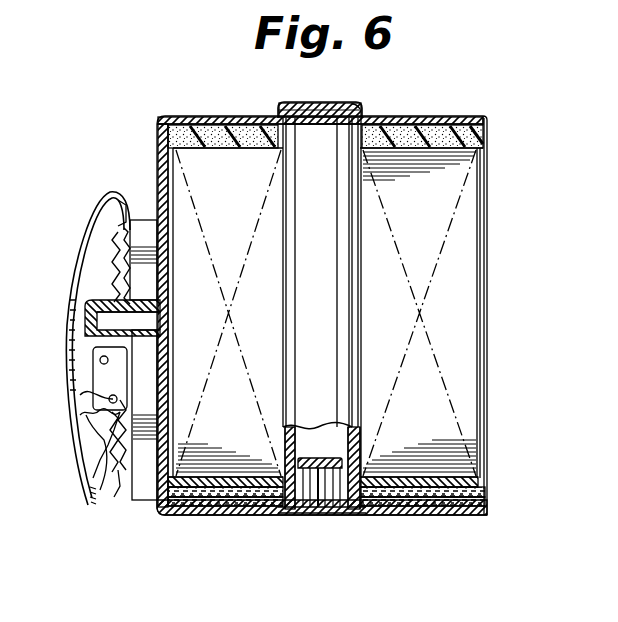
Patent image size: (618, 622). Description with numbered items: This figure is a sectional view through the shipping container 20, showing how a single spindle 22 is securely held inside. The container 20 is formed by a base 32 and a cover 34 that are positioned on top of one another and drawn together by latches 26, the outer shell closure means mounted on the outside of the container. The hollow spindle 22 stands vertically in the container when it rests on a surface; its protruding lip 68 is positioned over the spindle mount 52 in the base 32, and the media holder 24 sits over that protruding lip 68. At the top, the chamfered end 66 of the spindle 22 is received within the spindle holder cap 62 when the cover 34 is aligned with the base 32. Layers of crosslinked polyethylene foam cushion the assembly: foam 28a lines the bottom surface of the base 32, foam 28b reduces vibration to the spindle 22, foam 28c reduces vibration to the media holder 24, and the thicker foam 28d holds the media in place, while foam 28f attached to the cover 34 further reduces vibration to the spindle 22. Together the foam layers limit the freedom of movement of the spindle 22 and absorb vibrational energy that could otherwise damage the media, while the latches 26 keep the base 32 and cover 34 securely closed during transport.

The shipping container 20 is at (118, 157).
The spindle 22 is at (345, 258).
The media holder 24 is at (440, 480).
The latch 26 is at (78, 272).
The foam 28a is at (488, 510).
The foam 28b is at (488, 498).
The foam 28c is at (487, 490).
The foam 28d is at (487, 141).
The foam 28f is at (366, 116).
The base 32 is at (478, 520).
The cover 34 is at (483, 112).
The spindle mount 52 is at (326, 514).
The spindle holder cap 62 is at (296, 102).
The chamfered end 66 is at (346, 105).
The protruding lip 68 is at (294, 514).